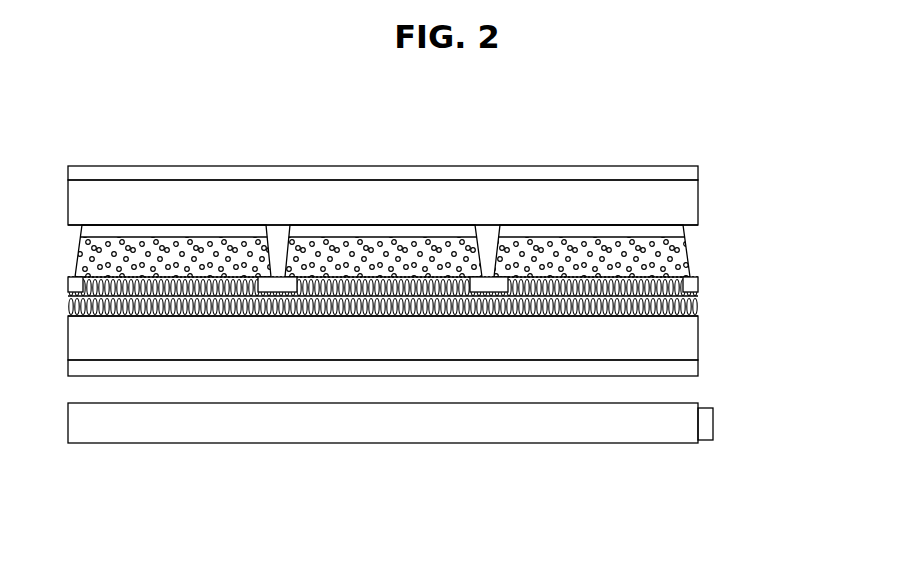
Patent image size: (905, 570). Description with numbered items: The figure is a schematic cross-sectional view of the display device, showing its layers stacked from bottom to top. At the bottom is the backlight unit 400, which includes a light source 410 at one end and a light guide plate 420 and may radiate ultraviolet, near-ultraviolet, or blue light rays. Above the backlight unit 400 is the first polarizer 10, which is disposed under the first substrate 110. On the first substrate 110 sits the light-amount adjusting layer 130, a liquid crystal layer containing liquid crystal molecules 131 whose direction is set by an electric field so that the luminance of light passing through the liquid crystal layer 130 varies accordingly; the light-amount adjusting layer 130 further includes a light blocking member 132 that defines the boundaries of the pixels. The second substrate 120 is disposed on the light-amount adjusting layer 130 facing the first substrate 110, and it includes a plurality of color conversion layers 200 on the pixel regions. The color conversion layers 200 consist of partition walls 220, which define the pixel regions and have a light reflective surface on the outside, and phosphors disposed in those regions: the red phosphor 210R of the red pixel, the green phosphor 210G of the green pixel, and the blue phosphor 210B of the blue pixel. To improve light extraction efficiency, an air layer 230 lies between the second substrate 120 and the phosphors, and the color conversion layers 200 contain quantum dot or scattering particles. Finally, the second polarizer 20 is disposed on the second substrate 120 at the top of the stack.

The first polarizer 10 is at (688, 370).
The second polarizer 20 is at (683, 174).
The first substrate 110 is at (683, 340).
The second substrate 120 is at (683, 206).
The light-amount adjusting layer 130 is at (451, 300).
The liquid crystal molecules 131 is at (688, 305).
The light blocking member 132 is at (690, 284).
The color conversion layers 200 is at (418, 197).
The red phosphor 210R is at (209, 247).
The green phosphor 210G is at (345, 248).
The blue phosphor 210B is at (555, 248).
The partition wall 220 is at (488, 250).
The air layer 230 is at (637, 233).
The backlight unit 400 is at (394, 475).
The light source 410 is at (706, 440).
The light guide plate 420 is at (650, 433).